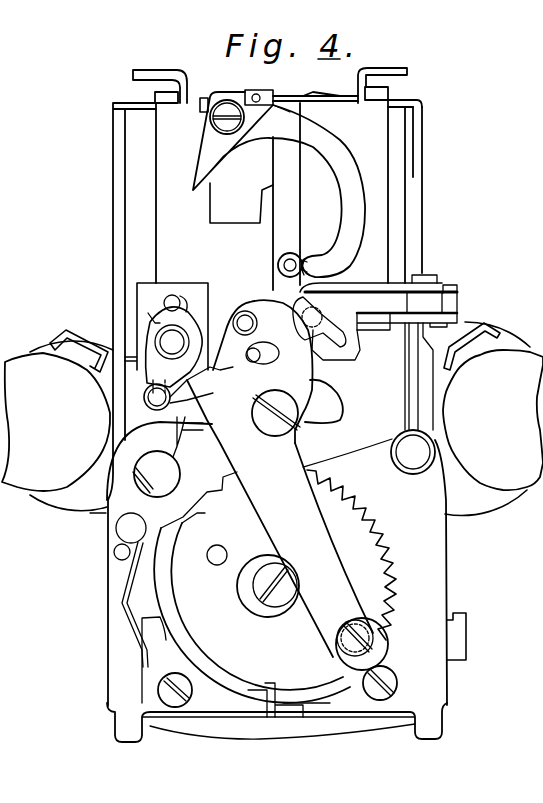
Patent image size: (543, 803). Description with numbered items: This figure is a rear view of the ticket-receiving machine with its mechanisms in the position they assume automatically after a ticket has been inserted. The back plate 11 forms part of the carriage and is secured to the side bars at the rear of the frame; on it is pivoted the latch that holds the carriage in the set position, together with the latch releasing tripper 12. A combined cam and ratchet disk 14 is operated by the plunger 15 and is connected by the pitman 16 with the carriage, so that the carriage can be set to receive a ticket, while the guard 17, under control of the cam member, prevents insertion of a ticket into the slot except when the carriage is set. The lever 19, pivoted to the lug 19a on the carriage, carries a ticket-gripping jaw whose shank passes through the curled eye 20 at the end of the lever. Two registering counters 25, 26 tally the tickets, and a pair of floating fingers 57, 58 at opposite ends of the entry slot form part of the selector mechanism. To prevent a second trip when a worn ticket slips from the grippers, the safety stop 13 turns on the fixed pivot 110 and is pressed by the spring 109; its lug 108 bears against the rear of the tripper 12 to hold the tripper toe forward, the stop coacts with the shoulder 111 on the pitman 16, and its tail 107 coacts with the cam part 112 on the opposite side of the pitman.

The back plate 11 is at (297, 371).
The latch releasing tripper 12 is at (260, 91).
The safety stop 13 is at (200, 157).
The combined cam and ratchet disk 14 is at (252, 587).
The plunger 15 is at (460, 662).
The pitman 16 is at (322, 540).
The guard 17 is at (298, 94).
The lever 19 is at (335, 288).
The lug 19a is at (393, 278).
The eye 20 is at (278, 257).
The registering counter 25 is at (57, 420).
The registering counter 26 is at (493, 418).
The floating finger 57 is at (360, 64).
The floating finger 58 is at (185, 72).
The tail 107 is at (312, 267).
The lug 108 is at (255, 103).
The spring 109 is at (255, 93).
The fixed pivot 110 is at (230, 127).
The shoulder 111 is at (203, 396).
The cam part 112 is at (293, 358).